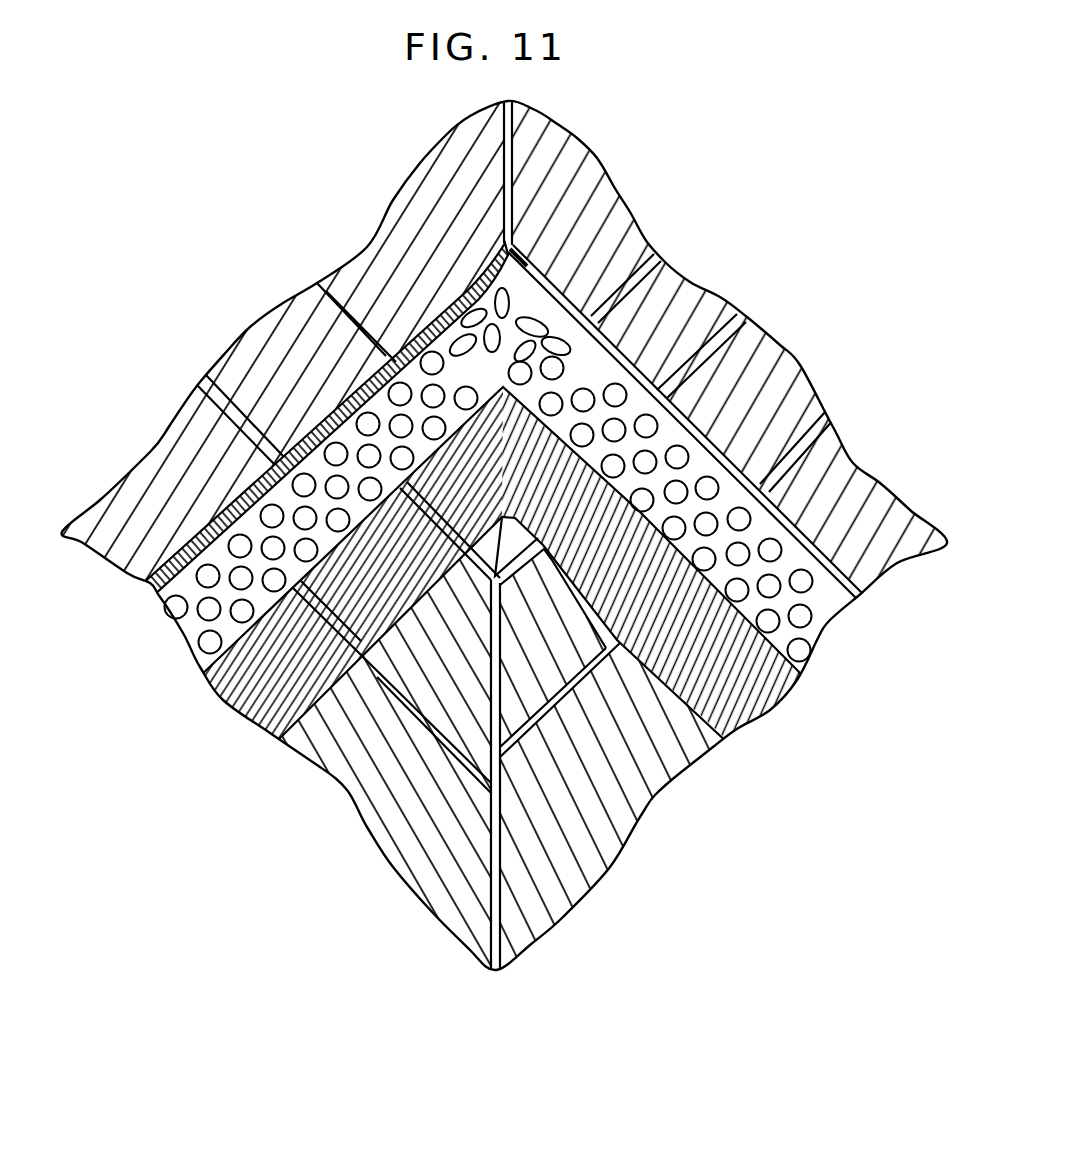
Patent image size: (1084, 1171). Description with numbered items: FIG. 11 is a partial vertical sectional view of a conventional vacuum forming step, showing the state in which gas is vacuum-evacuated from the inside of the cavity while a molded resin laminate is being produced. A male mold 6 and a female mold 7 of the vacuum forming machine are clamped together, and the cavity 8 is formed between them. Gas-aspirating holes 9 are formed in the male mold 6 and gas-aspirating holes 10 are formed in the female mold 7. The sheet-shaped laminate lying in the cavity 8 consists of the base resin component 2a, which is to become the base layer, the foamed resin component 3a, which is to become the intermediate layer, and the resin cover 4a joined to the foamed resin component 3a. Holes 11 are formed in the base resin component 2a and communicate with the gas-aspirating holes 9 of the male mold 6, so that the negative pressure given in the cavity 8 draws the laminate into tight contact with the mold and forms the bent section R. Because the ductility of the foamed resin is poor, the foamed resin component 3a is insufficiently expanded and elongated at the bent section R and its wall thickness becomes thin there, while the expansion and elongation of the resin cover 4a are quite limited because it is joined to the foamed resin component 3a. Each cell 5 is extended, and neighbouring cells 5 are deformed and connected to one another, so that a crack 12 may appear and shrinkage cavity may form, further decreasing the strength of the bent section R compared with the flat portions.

The base resin component 2a is at (757, 693).
The foamed resin component 3a is at (810, 625).
The resin cover 4a is at (861, 598).
The cell 5 is at (176, 606).
The male mold 6 is at (647, 768).
The female mold 7 is at (275, 363).
The cavity 8 is at (700, 442).
The gas-aspirating hole 9 is at (490, 936).
The gas-aspirating hole 10 is at (198, 386).
The hole 11 is at (244, 708).
The crack 12 is at (462, 294).
The bent section R is at (524, 232).